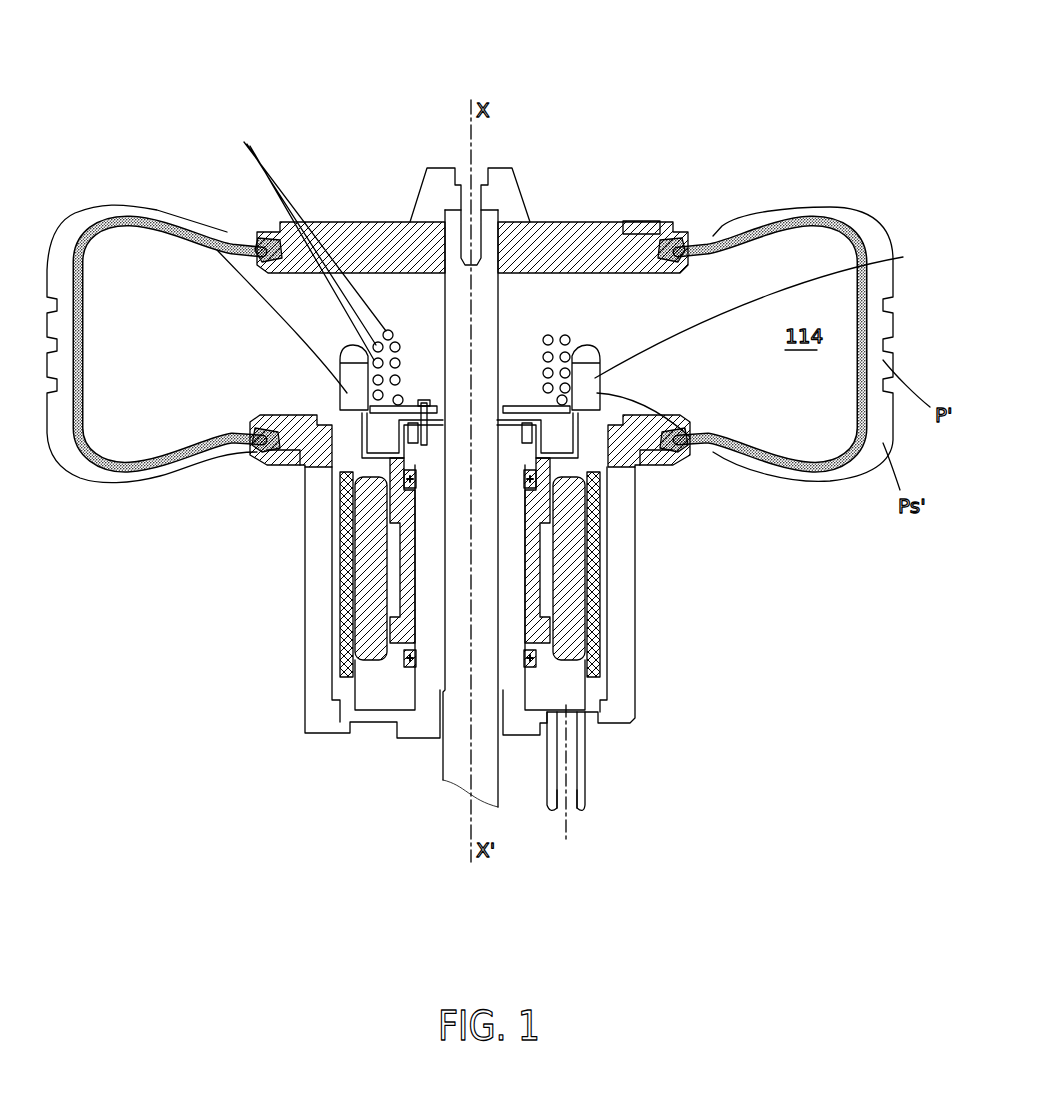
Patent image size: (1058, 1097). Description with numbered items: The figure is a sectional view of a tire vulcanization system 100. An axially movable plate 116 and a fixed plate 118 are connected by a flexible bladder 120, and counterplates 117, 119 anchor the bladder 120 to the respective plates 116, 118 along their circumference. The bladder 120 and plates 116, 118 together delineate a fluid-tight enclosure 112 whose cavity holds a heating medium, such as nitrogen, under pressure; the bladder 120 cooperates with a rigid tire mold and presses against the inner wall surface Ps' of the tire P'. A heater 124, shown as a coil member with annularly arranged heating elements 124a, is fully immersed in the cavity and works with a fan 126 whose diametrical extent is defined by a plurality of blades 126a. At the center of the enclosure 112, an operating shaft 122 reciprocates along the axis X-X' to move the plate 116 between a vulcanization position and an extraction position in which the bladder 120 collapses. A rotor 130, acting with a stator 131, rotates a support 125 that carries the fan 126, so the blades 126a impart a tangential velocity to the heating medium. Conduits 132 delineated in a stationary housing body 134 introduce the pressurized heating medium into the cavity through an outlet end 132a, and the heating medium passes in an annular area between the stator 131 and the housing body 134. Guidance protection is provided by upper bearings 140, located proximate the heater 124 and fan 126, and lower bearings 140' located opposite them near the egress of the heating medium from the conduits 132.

The tire vulcanization system 100 is at (277, 114).
The fluid-tight enclosure 112 is at (690, 250).
The axially movable plate 116 is at (402, 232).
The counterplate 117 is at (655, 221).
The fixed plate 118 is at (267, 467).
The counterplate 119 is at (658, 445).
The flexible bladder 120 is at (865, 238).
The operating shaft 122 is at (478, 710).
The heater 124 is at (565, 336).
The heating elements 124a is at (287, 239).
The support 125 is at (363, 443).
The fan 126 is at (693, 443).
The blades 126a is at (182, 218).
The rotor 130 is at (533, 565).
The stator 131 is at (570, 608).
The conduits 132 is at (580, 777).
The tube opening 132a is at (573, 815).
The stationary housing body 134 is at (622, 618).
The upper bearings 140 is at (292, 574).
The lower bearings 140' is at (531, 630).